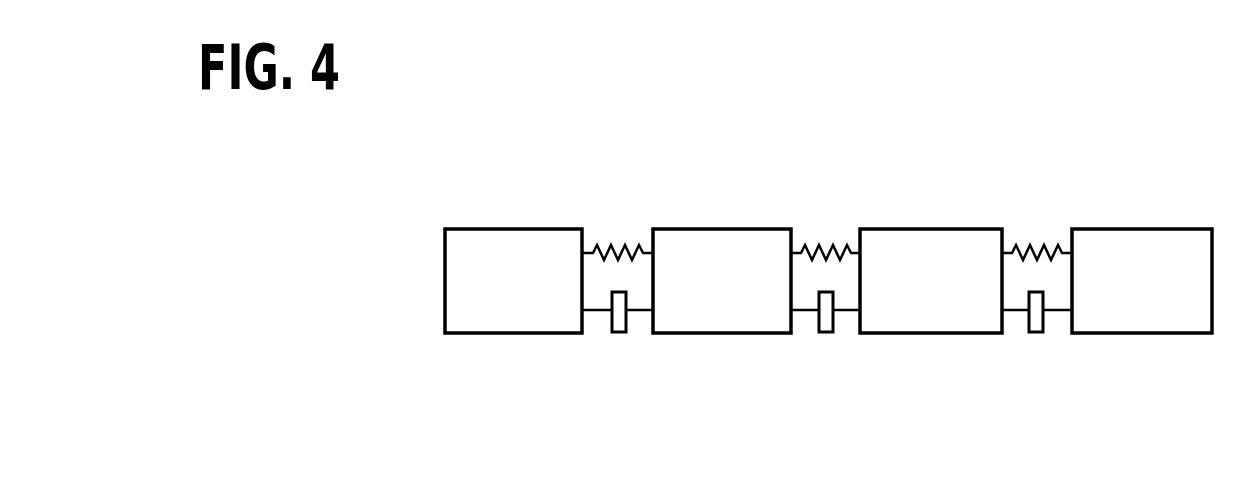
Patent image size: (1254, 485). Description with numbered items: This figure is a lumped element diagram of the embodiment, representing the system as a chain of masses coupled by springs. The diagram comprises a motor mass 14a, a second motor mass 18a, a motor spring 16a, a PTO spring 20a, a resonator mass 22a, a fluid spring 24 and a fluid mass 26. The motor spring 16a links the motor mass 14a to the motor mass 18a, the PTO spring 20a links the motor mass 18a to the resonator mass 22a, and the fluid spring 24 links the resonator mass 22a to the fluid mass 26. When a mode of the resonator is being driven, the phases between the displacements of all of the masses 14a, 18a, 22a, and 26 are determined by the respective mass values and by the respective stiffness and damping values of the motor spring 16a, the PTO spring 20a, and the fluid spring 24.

The motor mass 14a is at (519, 228).
The motor spring 16a is at (612, 246).
The motor mass 18a is at (729, 228).
The PTO spring 20a is at (820, 246).
The resonator mass 22a is at (938, 228).
The fluid spring 24 is at (1032, 246).
The fluid mass 26 is at (1149, 228).